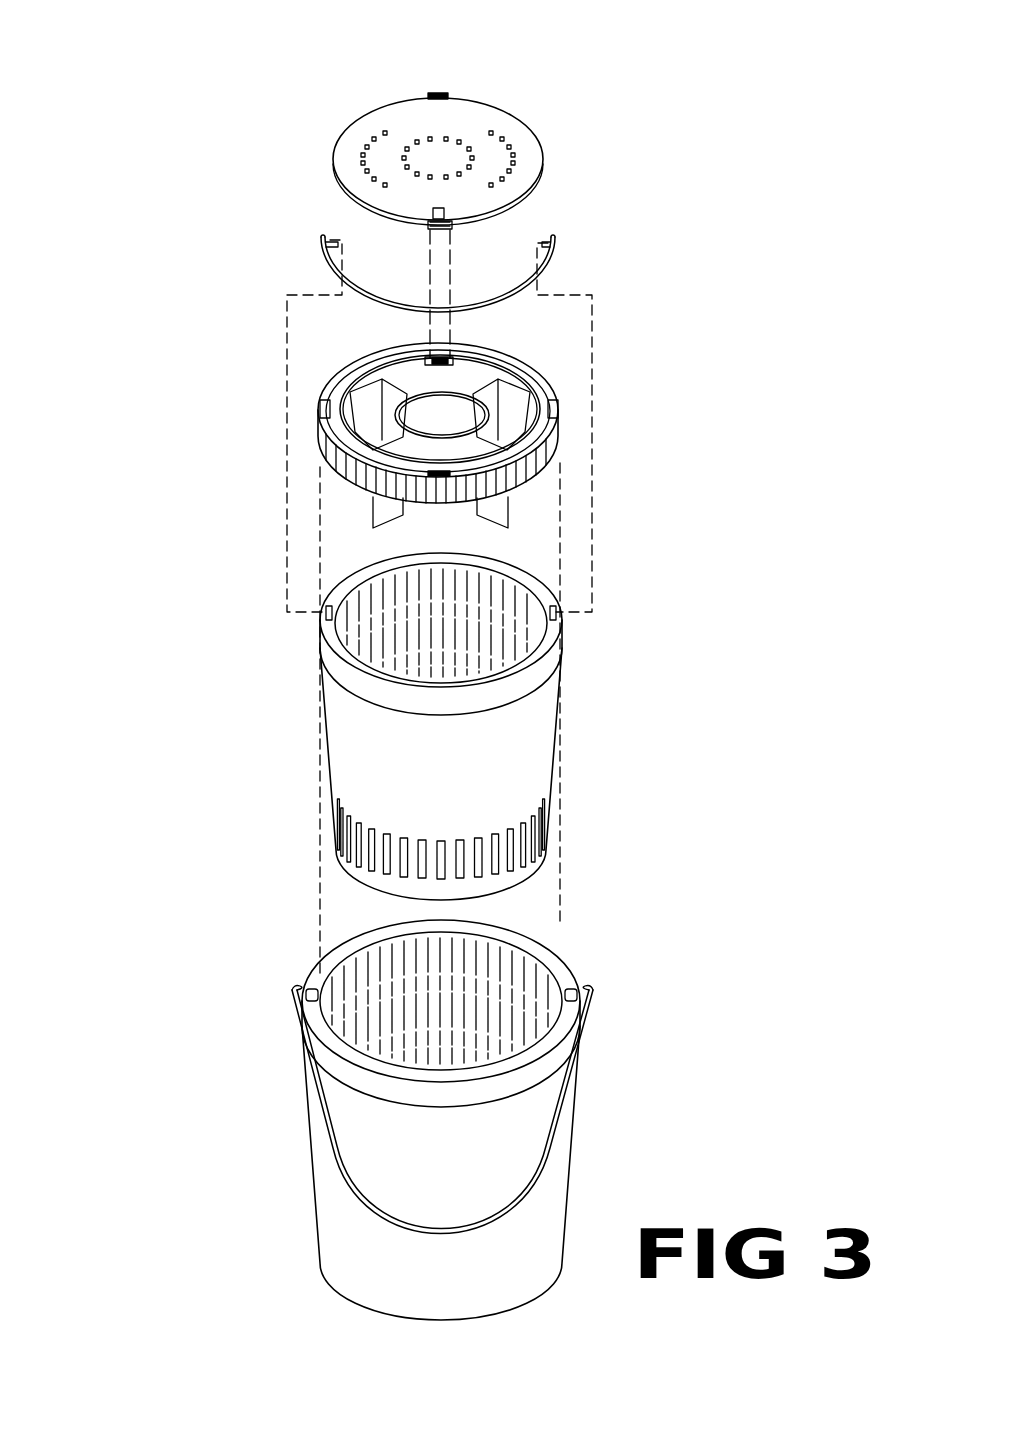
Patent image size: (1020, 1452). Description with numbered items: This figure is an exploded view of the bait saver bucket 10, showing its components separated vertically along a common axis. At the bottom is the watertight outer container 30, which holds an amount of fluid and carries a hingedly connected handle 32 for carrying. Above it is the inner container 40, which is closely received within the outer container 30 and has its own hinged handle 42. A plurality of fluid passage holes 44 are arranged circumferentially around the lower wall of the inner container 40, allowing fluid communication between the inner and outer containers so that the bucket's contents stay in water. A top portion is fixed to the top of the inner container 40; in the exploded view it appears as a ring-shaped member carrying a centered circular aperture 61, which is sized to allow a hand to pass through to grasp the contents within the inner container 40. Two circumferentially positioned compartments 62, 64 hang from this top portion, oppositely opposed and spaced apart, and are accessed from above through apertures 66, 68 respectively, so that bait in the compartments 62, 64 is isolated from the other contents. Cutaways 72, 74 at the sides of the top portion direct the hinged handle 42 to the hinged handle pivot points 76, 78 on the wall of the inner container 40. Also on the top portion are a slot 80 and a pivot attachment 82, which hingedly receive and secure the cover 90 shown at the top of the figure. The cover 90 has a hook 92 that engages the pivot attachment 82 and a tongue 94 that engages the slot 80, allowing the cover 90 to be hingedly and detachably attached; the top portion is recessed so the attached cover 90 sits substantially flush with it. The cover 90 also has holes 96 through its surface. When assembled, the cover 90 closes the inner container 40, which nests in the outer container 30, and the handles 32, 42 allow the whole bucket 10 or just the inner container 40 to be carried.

The bait saver bucket 10 is at (122, 270).
The outer container 30 is at (320, 1180).
The handle 32 is at (547, 1143).
The inner container 40 is at (540, 380).
The handle 42 is at (322, 247).
The fluid passage holes 44 is at (383, 860).
The circular aperture 61 is at (412, 413).
The compartment 62 is at (508, 522).
The compartment 64 is at (375, 522).
The aperture 66 is at (512, 425).
The aperture 68 is at (378, 403).
The cutaway 72 is at (556, 408).
The cutaway 74 is at (320, 410).
The hinged handle pivot point 76 is at (560, 610).
The hinged handle pivot point 78 is at (325, 625).
The slot 80 is at (436, 472).
The pivot attachment 82 is at (468, 364).
The cover 90 is at (487, 103).
The hook 92 is at (452, 227).
The tongue 94 is at (437, 92).
The holes 96 is at (372, 150).